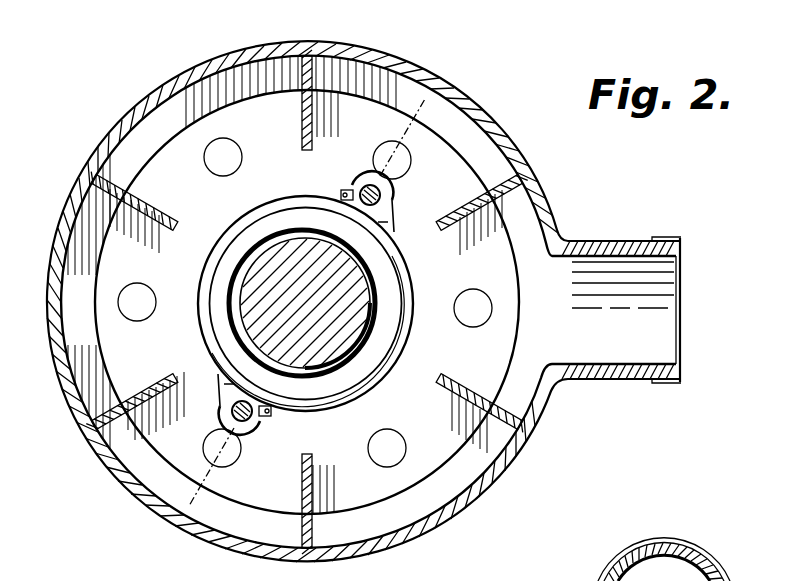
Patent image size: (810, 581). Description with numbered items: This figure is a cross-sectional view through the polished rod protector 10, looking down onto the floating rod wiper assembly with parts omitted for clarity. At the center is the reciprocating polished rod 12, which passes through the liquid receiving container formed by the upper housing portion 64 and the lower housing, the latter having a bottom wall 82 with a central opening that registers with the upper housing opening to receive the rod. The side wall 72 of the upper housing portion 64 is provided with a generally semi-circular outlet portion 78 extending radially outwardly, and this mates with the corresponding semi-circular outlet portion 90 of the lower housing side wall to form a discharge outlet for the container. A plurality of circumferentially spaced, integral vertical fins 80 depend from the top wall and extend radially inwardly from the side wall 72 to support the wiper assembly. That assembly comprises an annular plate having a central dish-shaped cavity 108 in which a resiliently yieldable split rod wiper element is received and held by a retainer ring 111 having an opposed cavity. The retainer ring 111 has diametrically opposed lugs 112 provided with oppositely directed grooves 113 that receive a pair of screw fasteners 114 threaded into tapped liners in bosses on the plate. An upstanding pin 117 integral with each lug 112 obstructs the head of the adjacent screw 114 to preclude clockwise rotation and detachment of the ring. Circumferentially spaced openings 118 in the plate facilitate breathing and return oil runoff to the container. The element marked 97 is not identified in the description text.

The polished rod protector 10 is at (383, 95).
The polished rod 12 is at (252, 277).
The upper housing portion 64 is at (126, 106).
The side wall 72 is at (232, 58).
The semi-circular outlet portion 78 is at (607, 380).
The fins 80 is at (313, 128).
The bottom wall 82 is at (464, 492).
The semi-circular outlet portion 90 is at (665, 302).
The ring 97 is at (638, 559).
The dish-shaped cavity 108 is at (420, 165).
The retainer ring 111 is at (390, 333).
The lugs 112 is at (390, 240).
The grooves 113 is at (355, 182).
The screw fasteners 114 is at (395, 225).
The pin 117 is at (340, 195).
The openings 118 is at (238, 148).